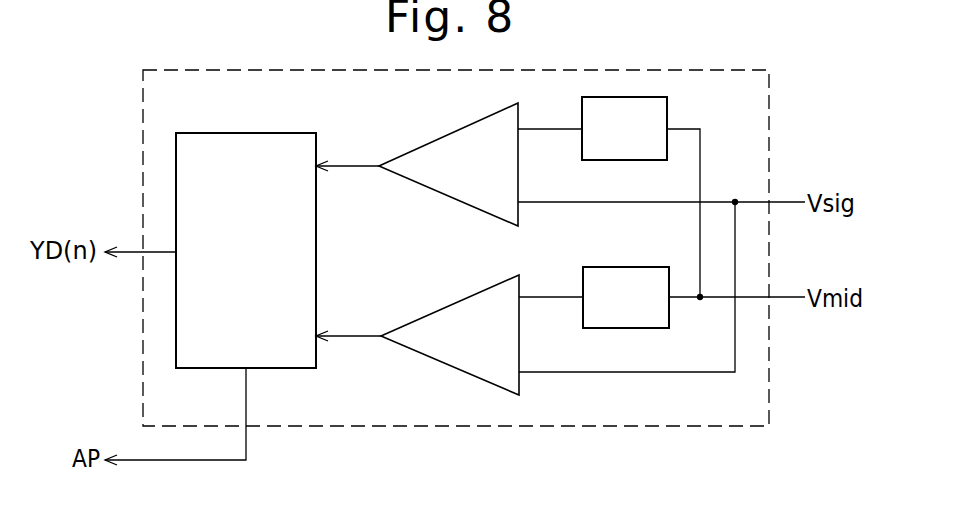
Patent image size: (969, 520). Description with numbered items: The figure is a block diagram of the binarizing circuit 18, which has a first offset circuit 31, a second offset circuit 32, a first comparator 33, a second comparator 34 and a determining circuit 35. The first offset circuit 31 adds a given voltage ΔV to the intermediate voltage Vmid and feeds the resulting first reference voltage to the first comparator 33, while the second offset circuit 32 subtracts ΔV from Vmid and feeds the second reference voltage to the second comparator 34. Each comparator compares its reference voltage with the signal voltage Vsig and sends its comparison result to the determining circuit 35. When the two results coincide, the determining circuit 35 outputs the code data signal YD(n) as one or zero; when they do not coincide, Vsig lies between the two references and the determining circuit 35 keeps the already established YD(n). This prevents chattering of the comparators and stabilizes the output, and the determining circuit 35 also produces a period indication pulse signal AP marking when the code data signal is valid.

The binarizing circuit 18 is at (677, 68).
The first offset circuit 31 is at (618, 97).
The second offset circuit 32 is at (640, 328).
The first comparator 33 is at (440, 137).
The second comparator 34 is at (450, 361).
The determining circuit 35 is at (303, 368).